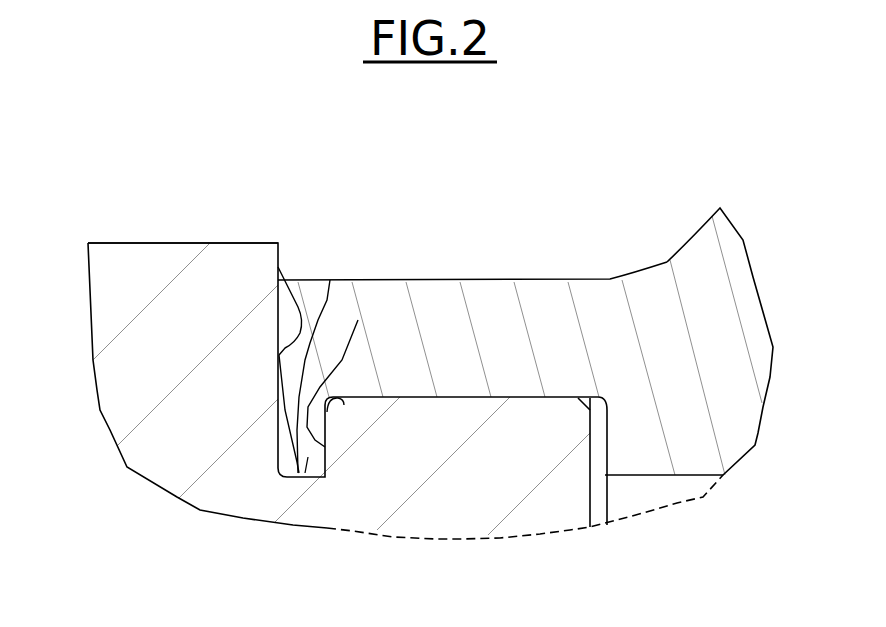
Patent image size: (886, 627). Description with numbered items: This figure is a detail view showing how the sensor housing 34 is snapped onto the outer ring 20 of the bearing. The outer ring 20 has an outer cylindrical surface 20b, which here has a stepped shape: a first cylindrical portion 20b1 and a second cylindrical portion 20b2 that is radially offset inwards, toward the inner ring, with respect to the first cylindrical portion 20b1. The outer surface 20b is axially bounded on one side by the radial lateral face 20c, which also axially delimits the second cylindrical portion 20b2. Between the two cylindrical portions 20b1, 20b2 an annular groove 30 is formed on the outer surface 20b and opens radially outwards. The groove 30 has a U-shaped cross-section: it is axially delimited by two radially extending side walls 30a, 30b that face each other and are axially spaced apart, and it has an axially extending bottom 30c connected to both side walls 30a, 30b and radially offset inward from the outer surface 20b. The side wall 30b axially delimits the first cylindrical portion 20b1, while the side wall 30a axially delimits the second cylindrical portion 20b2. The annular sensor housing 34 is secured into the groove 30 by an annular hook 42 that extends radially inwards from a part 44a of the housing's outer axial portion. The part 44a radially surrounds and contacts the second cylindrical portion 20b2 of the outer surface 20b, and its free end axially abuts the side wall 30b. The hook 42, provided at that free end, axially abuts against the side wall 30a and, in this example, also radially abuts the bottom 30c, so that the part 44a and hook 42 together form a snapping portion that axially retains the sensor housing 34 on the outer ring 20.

The outer ring 20 is at (122, 376).
The outer cylindrical surface 20b is at (184, 243).
The first cylindrical portion 20b1 is at (118, 243).
The second cylindrical portion 20b2 is at (462, 395).
The radial lateral face 20c is at (590, 503).
The groove 30 is at (330, 280).
The side wall 30a is at (358, 320).
The side wall 30b is at (278, 267).
The bottom 30c is at (313, 470).
The sensor housing 34 is at (725, 330).
The annular hook 42 is at (310, 460).
The part of the outer axial portion 44a is at (505, 323).